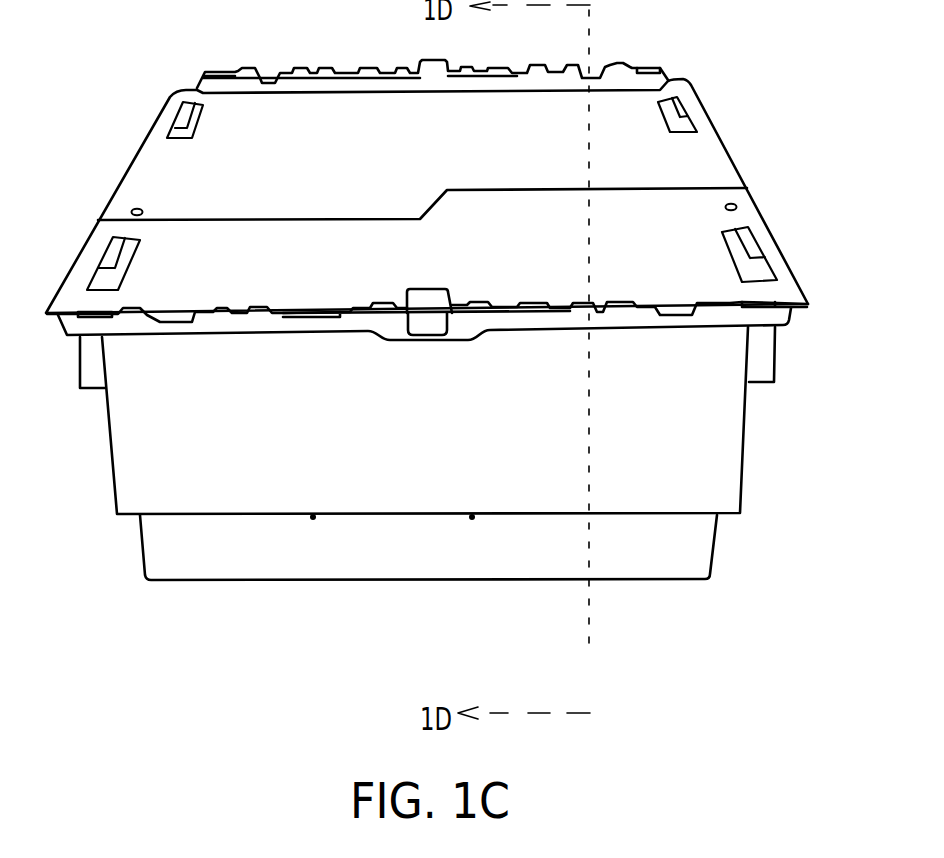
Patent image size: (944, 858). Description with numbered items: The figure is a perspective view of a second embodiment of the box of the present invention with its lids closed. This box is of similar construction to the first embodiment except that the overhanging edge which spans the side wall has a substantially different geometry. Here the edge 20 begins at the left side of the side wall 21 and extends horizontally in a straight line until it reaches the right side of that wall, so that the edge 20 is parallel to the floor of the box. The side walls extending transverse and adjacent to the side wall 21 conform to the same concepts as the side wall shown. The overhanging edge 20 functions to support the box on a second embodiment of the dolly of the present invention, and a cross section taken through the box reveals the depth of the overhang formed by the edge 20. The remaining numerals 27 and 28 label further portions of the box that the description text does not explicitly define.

The edge 20 is at (425, 484).
The side wall 21 is at (147, 495).
The rim band with feet 27 is at (150, 427).
The lid 28 is at (427, 351).